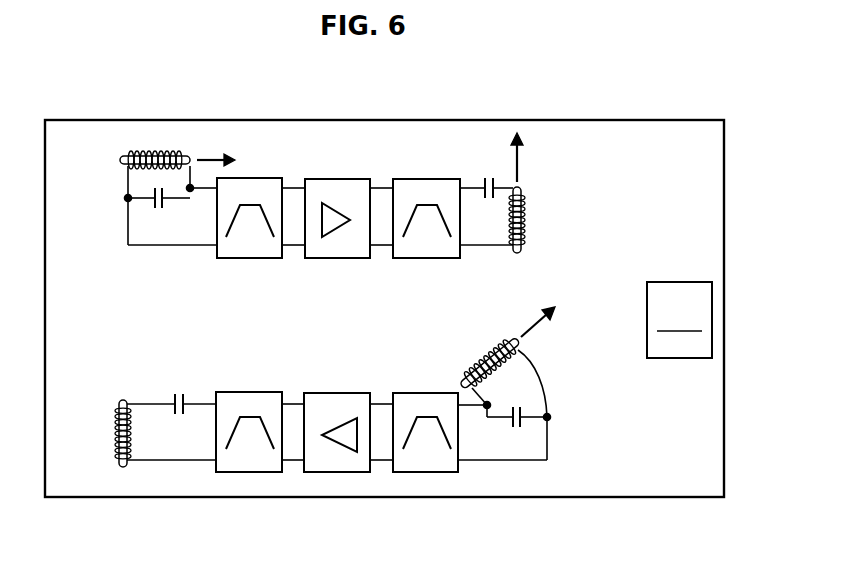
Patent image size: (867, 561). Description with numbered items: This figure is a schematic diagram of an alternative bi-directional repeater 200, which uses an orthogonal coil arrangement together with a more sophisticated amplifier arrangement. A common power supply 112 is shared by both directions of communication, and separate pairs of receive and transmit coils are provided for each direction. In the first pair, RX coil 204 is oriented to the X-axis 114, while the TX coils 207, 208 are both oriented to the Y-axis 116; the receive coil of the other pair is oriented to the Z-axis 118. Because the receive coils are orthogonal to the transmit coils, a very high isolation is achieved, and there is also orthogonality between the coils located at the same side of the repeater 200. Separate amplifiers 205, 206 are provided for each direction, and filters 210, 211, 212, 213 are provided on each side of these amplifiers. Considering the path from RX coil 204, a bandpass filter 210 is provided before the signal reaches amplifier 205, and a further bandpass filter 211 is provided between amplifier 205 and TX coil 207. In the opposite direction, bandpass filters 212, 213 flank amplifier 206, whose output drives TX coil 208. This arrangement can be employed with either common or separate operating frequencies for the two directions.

The bi-directional repeater 200 is at (687, 103).
The RX coil 204 is at (151, 154).
The X-axis 114 is at (203, 154).
The bandpass filter 210 is at (253, 178).
The amplifier 205 is at (338, 179).
The bandpass filter 211 is at (432, 179).
The TX coil 207 is at (526, 208).
The Y-axis 116 is at (518, 156).
The TX coil 208 is at (116, 458).
The bandpass filter 212 is at (267, 392).
The amplifier 206 is at (327, 393).
The bandpass filter 213 is at (422, 393).
The Z-axis 118 is at (521, 324).
The common power supply 112 is at (679, 320).